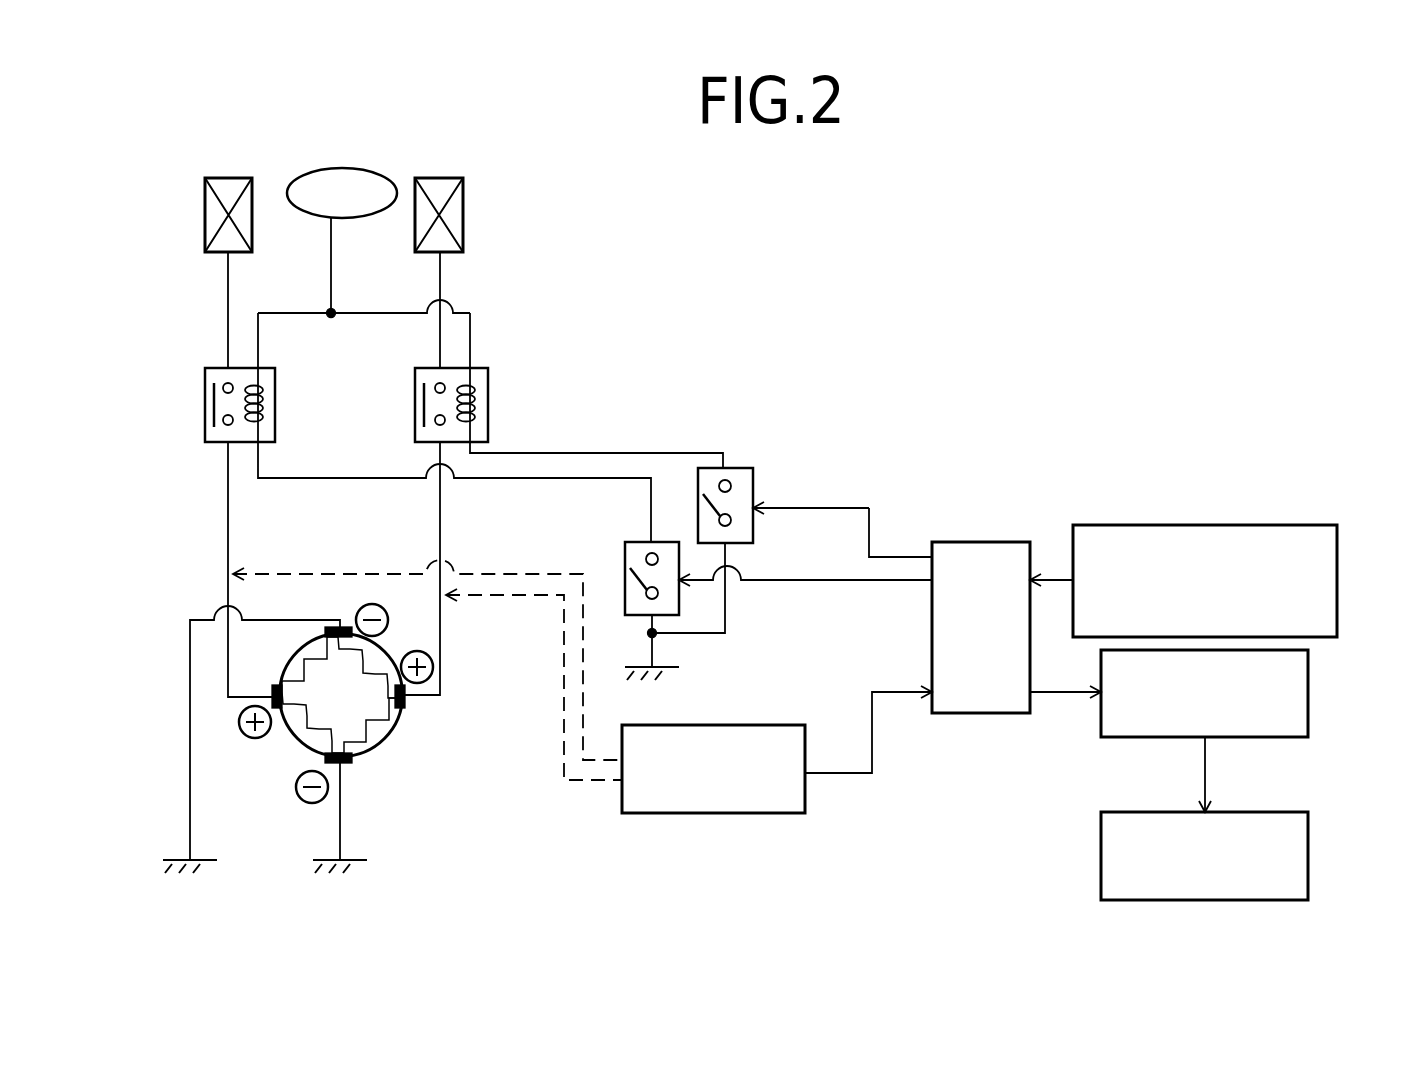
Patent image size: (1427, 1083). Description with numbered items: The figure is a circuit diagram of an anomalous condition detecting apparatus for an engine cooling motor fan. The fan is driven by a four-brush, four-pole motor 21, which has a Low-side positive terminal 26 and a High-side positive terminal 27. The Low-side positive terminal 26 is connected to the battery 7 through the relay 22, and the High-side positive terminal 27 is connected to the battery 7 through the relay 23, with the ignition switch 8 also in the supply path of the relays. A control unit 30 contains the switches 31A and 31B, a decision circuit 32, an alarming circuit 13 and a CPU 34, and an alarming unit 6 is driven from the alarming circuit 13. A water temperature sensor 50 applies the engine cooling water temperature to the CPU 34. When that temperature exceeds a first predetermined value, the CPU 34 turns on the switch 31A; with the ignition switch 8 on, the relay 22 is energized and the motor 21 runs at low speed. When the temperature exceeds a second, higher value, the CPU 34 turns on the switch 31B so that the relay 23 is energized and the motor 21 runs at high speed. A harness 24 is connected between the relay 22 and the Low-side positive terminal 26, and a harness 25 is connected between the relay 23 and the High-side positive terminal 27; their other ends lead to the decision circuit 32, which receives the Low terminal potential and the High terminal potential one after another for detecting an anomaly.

The battery 7 is at (205, 188).
The ignition switch 8 is at (322, 172).
The relay 23 is at (276, 400).
The relay 22 is at (489, 400).
The harness 25 is at (503, 572).
The harness 24 is at (520, 598).
The control unit 30 is at (917, 450).
The switch 31A is at (740, 468).
The switch 31B is at (667, 542).
The CPU 34 is at (972, 542).
The decision circuit 32 is at (714, 814).
The water temperature sensor 50 is at (1338, 578).
The alarming circuit 13 is at (1309, 695).
The alarming unit 6 is at (1309, 858).
The motor 21 is at (350, 764).
The High-side positive terminal 27 is at (275, 686).
The Low-side positive terminal 26 is at (406, 706).